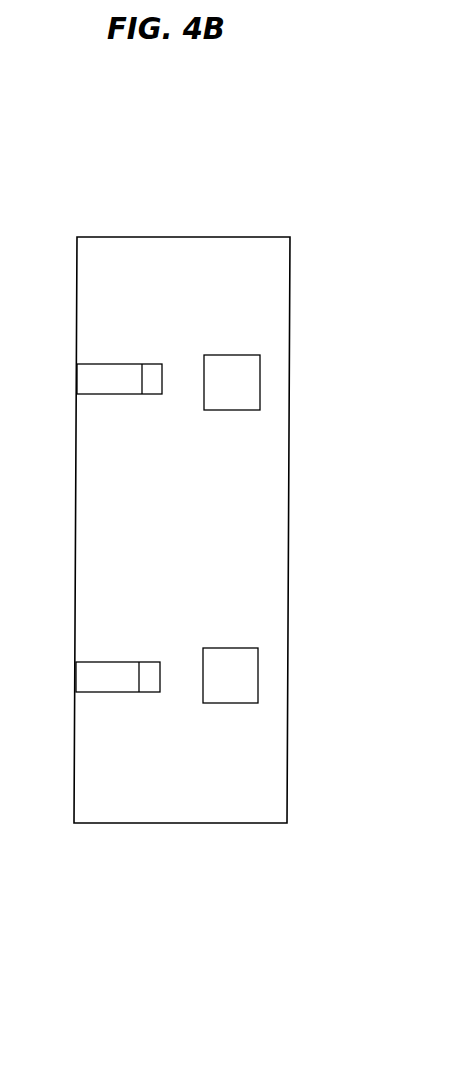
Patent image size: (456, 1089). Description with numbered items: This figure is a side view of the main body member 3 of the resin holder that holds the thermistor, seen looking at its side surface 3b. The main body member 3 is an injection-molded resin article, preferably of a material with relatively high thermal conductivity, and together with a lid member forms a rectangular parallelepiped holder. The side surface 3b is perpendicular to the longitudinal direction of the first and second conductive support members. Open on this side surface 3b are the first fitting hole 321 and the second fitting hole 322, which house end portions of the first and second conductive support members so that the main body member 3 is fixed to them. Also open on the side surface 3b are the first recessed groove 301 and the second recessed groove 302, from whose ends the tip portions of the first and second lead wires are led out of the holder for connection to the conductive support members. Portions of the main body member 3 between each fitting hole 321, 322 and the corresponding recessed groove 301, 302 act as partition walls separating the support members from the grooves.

The main body member 3 is at (236, 237).
The side surface 3b is at (269, 505).
The first recessed groove 301 is at (75, 678).
The second recessed groove 302 is at (76, 388).
The first fitting hole 321 is at (243, 680).
The second fitting hole 322 is at (247, 390).